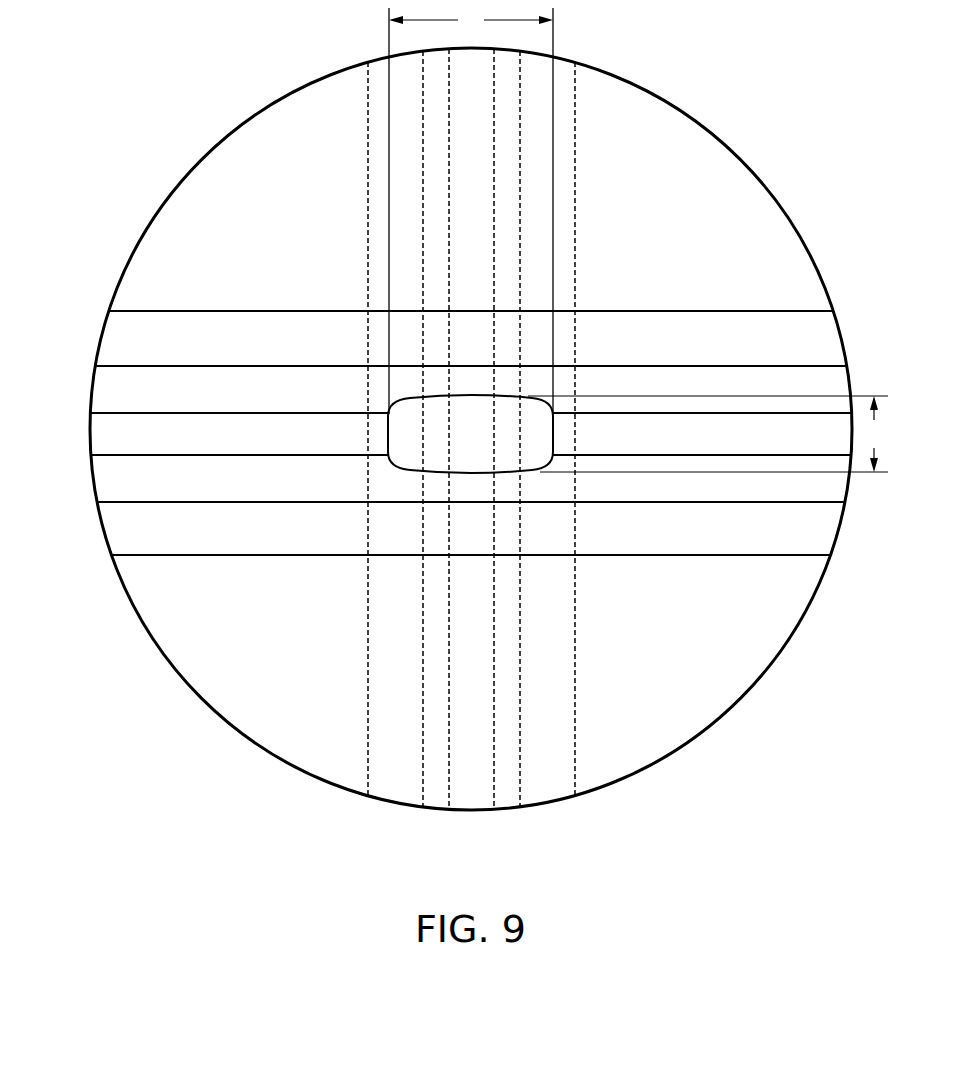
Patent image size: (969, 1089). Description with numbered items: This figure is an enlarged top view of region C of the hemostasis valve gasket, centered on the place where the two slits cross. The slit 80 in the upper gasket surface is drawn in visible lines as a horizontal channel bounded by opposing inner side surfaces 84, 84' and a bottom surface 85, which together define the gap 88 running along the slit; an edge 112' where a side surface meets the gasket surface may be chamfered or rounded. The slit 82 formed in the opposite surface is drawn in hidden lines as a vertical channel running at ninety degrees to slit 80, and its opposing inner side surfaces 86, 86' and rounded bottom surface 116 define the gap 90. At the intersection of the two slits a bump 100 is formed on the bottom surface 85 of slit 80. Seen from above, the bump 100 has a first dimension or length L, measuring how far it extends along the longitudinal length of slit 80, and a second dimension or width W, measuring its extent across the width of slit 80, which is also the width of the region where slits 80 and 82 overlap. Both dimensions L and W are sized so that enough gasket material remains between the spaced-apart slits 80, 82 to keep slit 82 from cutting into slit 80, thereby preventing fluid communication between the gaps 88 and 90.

The region C is at (731, 149).
The slit 80 is at (166, 326).
The inner side surface 84 is at (438, 336).
The bottom surface 85 is at (112, 432).
The inner side surface 84' is at (430, 528).
The edge 112' is at (420, 573).
The gap 88 is at (838, 382).
The width W is at (874, 434).
The length L is at (471, 211).
The bump 100 is at (548, 421).
The inner side surface 86' is at (341, 429).
The bottom surface 116 is at (470, 677).
The gap 90 is at (506, 598).
The inner side surface 86 is at (576, 429).
The slit 82 is at (586, 666).